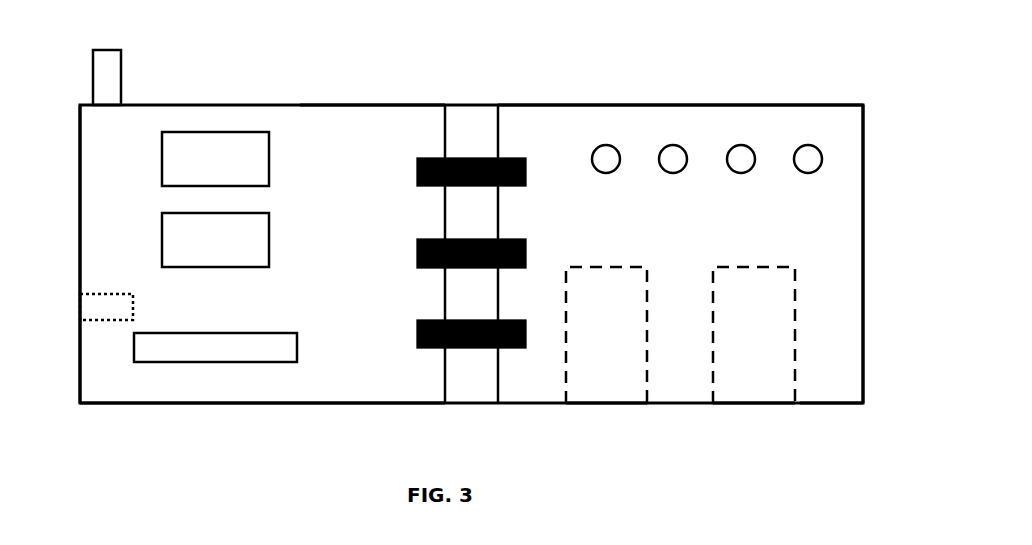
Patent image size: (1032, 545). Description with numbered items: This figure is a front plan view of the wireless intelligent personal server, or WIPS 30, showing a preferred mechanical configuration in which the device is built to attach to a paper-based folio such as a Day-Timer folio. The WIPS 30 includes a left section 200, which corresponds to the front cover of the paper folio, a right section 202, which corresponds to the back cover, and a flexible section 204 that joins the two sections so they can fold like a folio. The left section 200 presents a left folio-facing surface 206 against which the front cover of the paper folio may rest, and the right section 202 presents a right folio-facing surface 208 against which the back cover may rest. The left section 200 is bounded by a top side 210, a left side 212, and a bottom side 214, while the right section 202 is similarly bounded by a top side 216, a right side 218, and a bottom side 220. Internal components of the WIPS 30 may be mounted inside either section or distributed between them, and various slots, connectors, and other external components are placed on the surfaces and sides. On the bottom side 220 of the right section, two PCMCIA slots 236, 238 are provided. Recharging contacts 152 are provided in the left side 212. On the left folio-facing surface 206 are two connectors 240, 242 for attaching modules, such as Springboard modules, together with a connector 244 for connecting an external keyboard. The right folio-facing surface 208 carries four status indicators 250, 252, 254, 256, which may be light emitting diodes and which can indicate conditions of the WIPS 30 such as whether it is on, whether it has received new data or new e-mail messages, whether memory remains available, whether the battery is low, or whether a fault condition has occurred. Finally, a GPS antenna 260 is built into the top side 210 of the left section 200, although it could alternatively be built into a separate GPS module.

The WIPS 30 is at (100, 407).
The recharging contacts 152 is at (80, 310).
The left section 200 is at (222, 104).
The right section 202 is at (748, 104).
The flexible section 204 is at (472, 103).
The left folio-facing surface 206 is at (100, 180).
The right folio-facing surface 208 is at (848, 218).
The top side 210 is at (365, 103).
The left side 212 is at (78, 118).
The bottom side 214 is at (229, 405).
The top side 216 is at (567, 103).
The right side 218 is at (864, 146).
The bottom side 220 is at (848, 405).
The PCMCIA slot 236 is at (607, 405).
The PCMCIA slot 238 is at (753, 405).
The connector 240 is at (271, 160).
The connector 242 is at (271, 233).
The connector 244 is at (298, 348).
The status indicator 250 is at (590, 162).
The status indicator 252 is at (657, 162).
The status indicator 254 is at (725, 162).
The status indicator 256 is at (793, 162).
The GPS antenna 260 is at (107, 50).